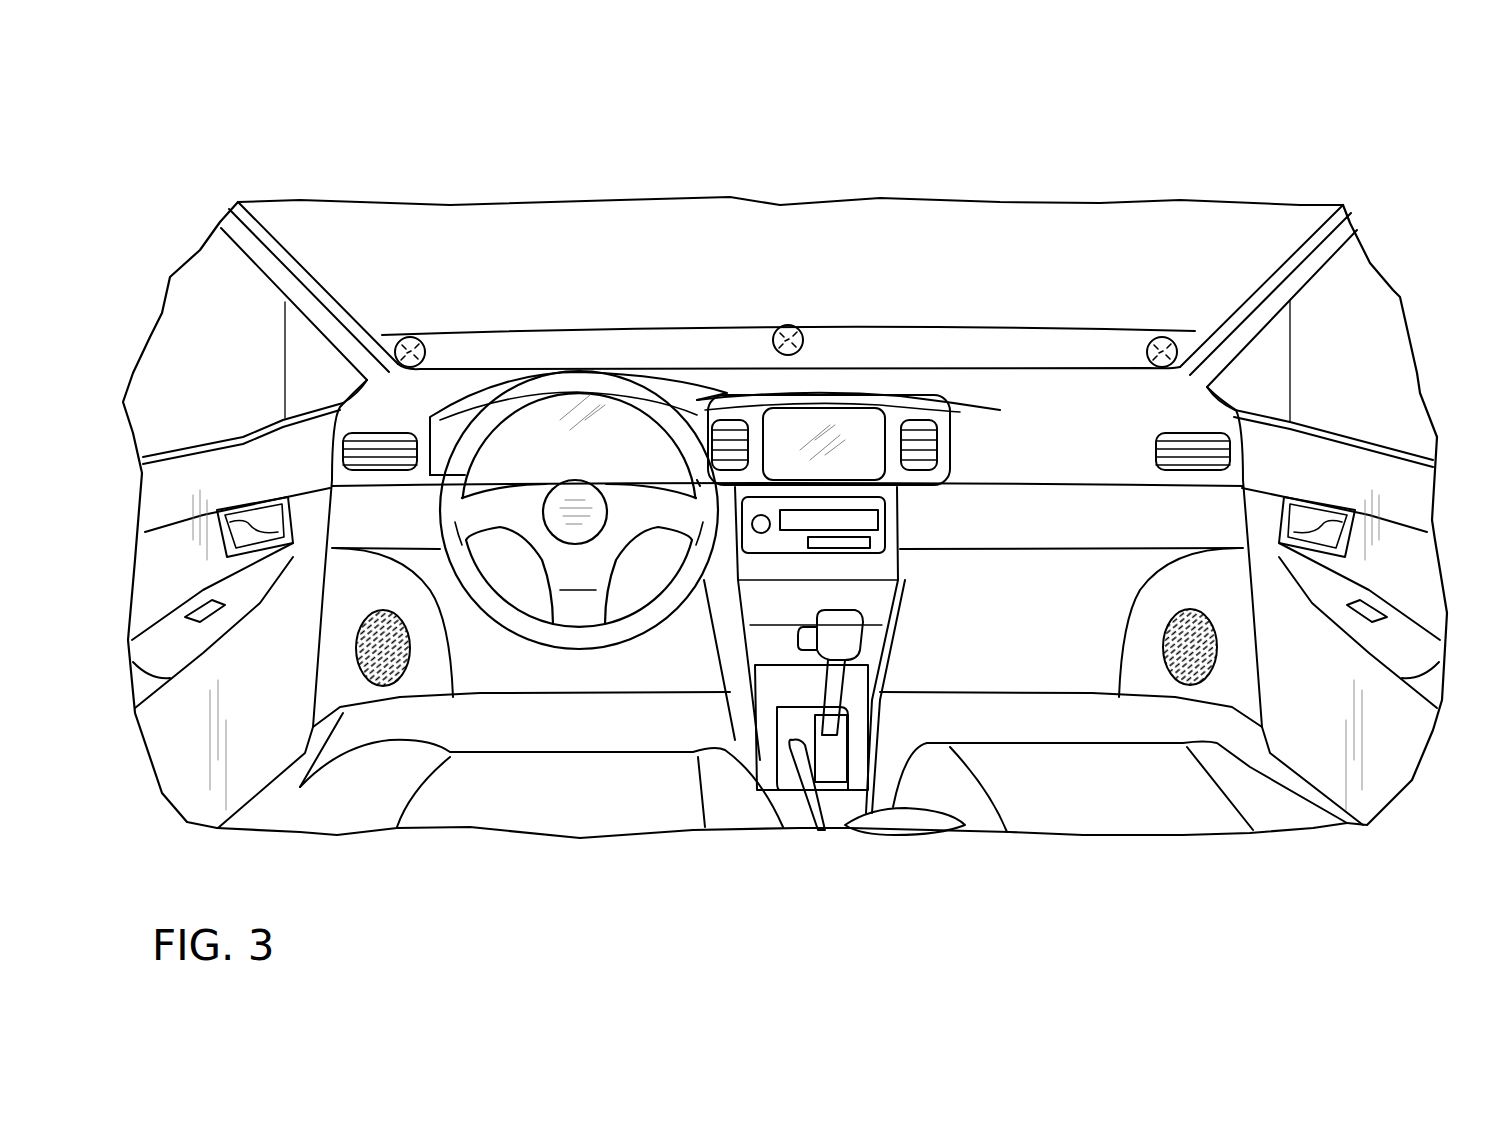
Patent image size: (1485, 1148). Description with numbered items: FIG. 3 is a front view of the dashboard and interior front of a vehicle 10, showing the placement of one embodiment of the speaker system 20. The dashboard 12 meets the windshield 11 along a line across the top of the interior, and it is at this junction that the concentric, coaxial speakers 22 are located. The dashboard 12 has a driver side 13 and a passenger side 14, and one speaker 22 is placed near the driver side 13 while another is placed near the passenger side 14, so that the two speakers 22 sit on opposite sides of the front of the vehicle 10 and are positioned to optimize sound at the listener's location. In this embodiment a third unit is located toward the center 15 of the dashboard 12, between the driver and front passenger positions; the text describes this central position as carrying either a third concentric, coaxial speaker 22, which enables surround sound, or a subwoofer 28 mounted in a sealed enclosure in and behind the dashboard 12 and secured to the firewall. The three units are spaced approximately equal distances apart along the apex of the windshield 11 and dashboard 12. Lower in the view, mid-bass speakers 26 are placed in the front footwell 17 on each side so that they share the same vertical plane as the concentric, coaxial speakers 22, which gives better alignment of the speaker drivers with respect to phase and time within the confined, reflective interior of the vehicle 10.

The vehicle 10 is at (447, 847).
The windshield 11 is at (878, 230).
The dashboard 12 is at (905, 392).
The driver side 13 is at (309, 192).
The passenger side 14 is at (1272, 191).
The center 15 is at (740, 180).
The front footwell 17 is at (342, 692).
The speaker system 20 is at (1152, 108).
The concentric, coaxial speaker 22 is at (415, 340).
The mid-bass speaker 26 is at (358, 640).
The subwoofer 28 is at (797, 330).